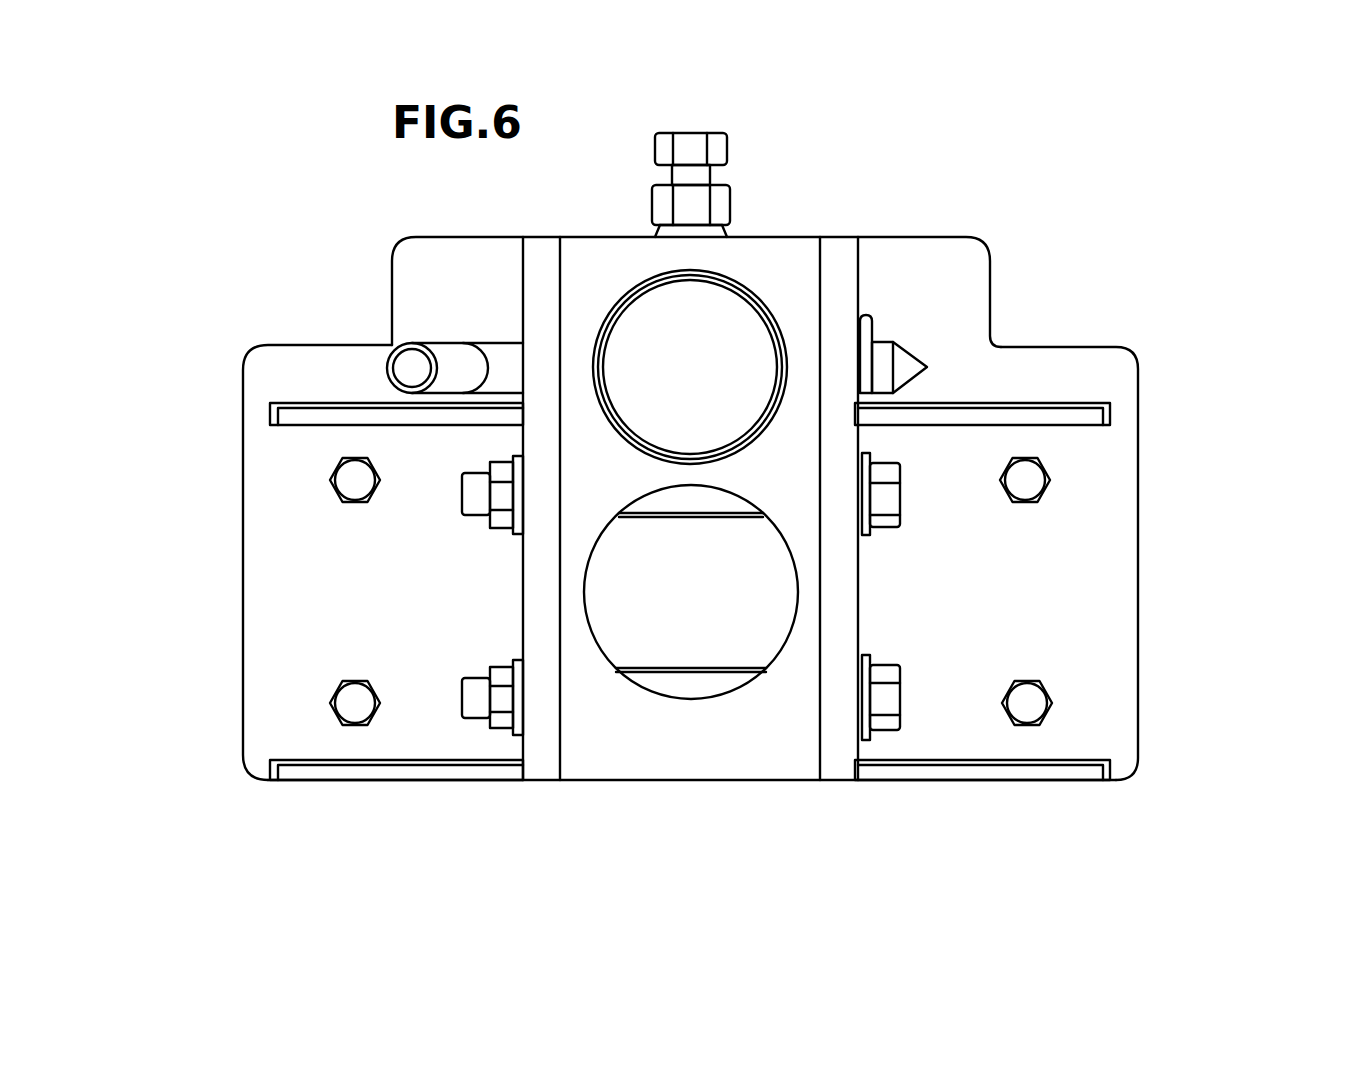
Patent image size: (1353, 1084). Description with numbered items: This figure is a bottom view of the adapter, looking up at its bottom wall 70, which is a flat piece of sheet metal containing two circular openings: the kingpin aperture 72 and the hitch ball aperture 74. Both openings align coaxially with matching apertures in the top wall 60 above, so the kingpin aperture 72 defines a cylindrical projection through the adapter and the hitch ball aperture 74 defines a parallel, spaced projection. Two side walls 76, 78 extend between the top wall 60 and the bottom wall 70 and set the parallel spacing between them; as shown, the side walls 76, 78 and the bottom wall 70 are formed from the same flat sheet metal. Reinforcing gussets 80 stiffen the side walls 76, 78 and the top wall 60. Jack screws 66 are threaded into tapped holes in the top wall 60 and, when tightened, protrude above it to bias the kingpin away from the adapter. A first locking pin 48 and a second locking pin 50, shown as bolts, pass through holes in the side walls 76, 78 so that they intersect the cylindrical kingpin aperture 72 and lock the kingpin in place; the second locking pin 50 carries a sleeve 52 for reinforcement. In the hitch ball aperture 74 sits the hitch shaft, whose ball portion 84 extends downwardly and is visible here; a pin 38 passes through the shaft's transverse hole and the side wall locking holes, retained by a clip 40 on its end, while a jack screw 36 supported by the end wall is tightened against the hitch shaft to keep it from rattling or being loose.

The jack screw 36 is at (683, 130).
The pin 38 is at (395, 355).
The clip 40 is at (868, 318).
The first locking pin 48 is at (460, 497).
The second locking pin 50 is at (462, 697).
The sleeve 52 is at (682, 677).
The top wall 60 is at (243, 556).
The jack screws 66 is at (355, 480).
The bottom wall 70 is at (630, 782).
The kingpin aperture 72 is at (785, 645).
The hitch ball aperture 74 is at (748, 287).
The side wall 76 is at (523, 600).
The side wall 78 is at (858, 600).
The reinforcing gussets 80 is at (296, 413).
The ball portion 84 is at (718, 395).